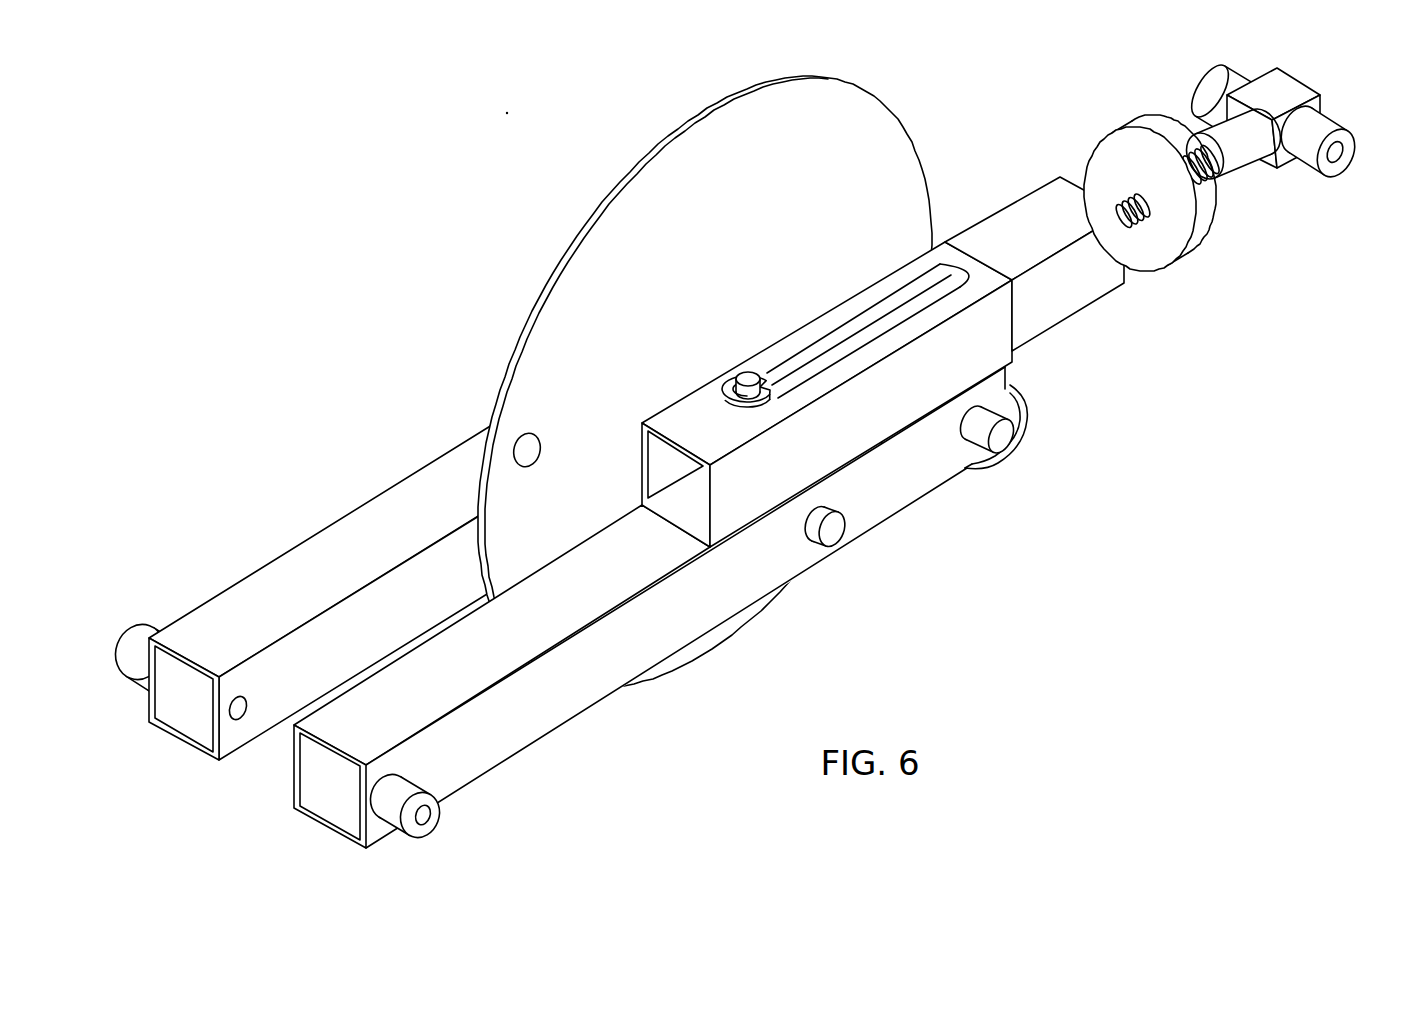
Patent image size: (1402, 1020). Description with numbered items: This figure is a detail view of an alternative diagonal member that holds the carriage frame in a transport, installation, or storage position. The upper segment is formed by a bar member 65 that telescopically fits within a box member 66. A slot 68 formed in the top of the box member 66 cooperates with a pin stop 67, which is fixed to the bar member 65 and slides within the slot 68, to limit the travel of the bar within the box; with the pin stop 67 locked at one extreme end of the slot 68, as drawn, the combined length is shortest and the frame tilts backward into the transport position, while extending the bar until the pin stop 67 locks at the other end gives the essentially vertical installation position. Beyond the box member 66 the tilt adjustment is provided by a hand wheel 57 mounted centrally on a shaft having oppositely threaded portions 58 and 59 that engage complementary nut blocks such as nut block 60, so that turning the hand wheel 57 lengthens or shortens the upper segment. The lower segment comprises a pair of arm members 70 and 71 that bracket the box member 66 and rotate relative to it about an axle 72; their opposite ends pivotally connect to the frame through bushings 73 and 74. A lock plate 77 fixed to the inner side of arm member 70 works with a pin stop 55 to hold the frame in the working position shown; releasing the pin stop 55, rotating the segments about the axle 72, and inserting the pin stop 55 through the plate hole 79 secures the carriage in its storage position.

The pin stop 55 is at (1003, 440).
The hand wheel 57 is at (1200, 238).
The threaded shaft end 58 is at (1216, 187).
The threaded shaft end 59 is at (1123, 222).
The nut block 60 is at (1222, 131).
The bar member 65 is at (1068, 293).
The box member 66 is at (997, 343).
The pin stop 67 is at (737, 377).
The slot 68 is at (931, 267).
The arm member 70 is at (313, 547).
The arm member 71 is at (488, 743).
The axle 72 is at (832, 537).
The bushing 73 is at (137, 633).
The bushing 74 is at (384, 807).
The lock plate 77 is at (658, 178).
The plate hole 79 is at (527, 434).